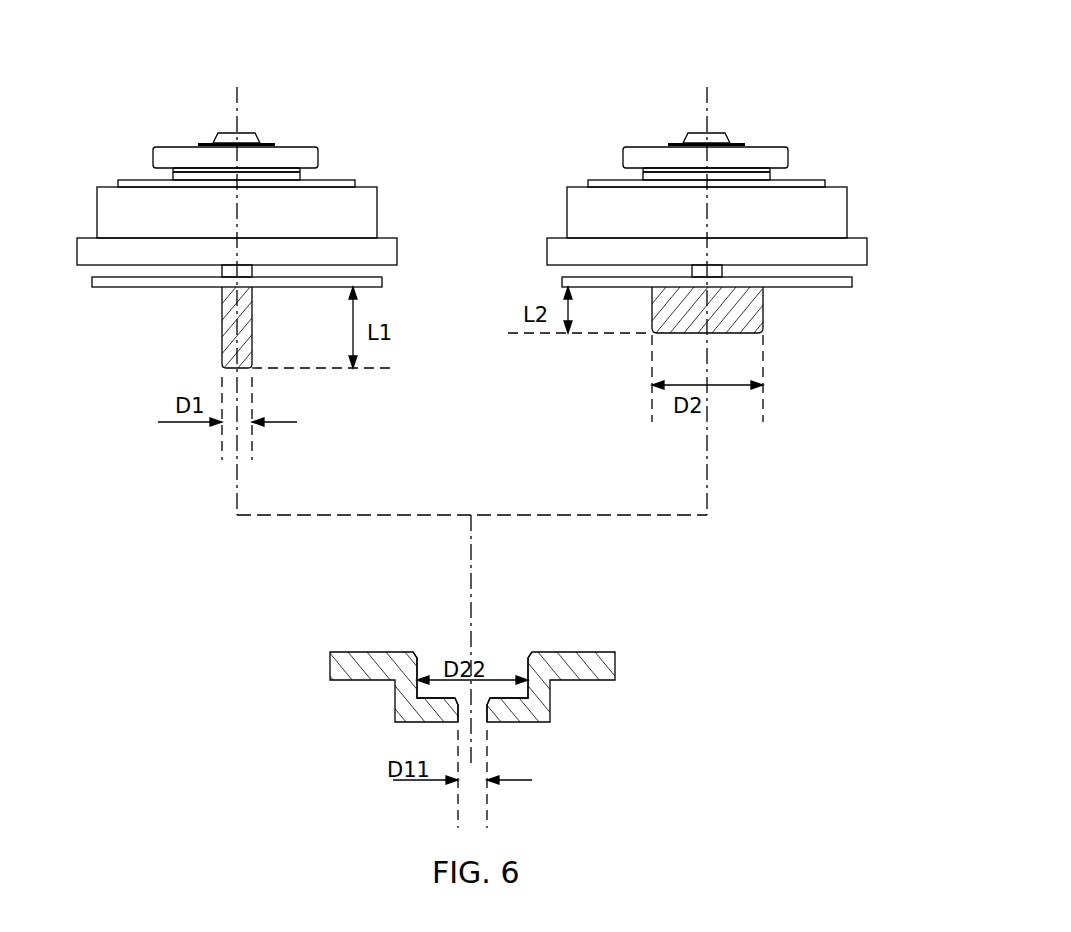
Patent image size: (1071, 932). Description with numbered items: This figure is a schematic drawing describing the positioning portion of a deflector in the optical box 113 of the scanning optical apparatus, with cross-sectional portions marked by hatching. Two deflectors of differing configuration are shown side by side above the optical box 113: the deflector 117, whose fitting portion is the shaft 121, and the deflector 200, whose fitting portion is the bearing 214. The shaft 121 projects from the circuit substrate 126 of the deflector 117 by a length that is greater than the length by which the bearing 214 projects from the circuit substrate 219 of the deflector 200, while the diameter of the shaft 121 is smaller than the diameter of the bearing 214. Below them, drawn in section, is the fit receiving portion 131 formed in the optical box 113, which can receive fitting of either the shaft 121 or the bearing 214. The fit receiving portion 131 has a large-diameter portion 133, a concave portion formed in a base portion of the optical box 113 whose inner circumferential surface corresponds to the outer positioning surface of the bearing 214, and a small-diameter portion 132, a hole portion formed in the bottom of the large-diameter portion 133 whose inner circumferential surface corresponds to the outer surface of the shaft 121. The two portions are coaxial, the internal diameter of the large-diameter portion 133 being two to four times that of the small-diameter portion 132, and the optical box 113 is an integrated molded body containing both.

The deflector 117 is at (315, 112).
The deflector 200 is at (787, 113).
The shaft 121 is at (232, 332).
The circuit substrate 126 is at (293, 280).
The bearing 214 is at (673, 307).
The circuit substrate 219 is at (788, 282).
The fit receiving portion 131 is at (553, 642).
The optical box 113 is at (350, 663).
The large-diameter portion 133 is at (528, 690).
The small-diameter portion 132 is at (492, 713).